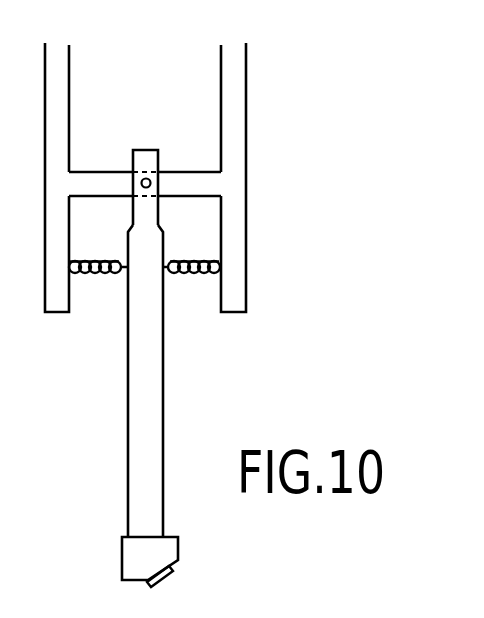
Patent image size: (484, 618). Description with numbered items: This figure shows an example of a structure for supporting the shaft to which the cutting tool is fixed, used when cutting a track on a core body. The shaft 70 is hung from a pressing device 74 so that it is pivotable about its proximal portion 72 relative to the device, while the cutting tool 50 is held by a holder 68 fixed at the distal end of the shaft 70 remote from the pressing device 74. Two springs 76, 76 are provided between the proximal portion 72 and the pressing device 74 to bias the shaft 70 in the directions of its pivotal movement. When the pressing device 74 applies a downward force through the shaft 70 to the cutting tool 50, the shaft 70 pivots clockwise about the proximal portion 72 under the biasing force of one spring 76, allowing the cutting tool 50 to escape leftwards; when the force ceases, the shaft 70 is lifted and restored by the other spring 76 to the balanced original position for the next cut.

The pressing device 74 is at (239, 93).
The proximal portion 72 is at (146, 153).
The shaft 70 is at (157, 413).
The springs 76 is at (97, 275).
The holder 68 is at (132, 553).
The cutting tool 50 is at (170, 570).